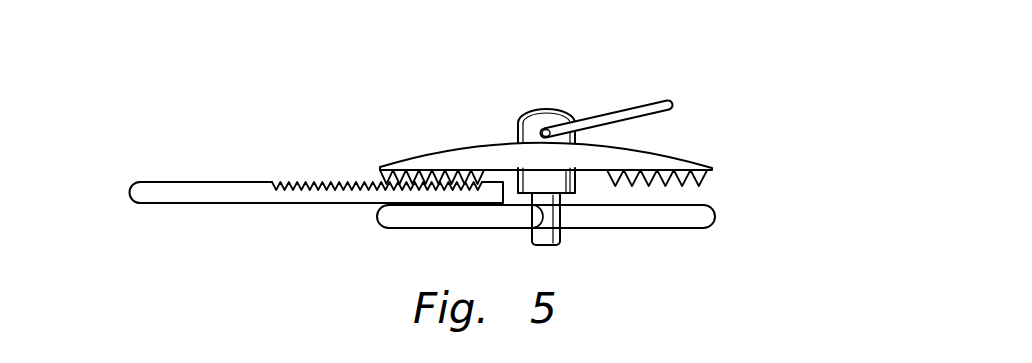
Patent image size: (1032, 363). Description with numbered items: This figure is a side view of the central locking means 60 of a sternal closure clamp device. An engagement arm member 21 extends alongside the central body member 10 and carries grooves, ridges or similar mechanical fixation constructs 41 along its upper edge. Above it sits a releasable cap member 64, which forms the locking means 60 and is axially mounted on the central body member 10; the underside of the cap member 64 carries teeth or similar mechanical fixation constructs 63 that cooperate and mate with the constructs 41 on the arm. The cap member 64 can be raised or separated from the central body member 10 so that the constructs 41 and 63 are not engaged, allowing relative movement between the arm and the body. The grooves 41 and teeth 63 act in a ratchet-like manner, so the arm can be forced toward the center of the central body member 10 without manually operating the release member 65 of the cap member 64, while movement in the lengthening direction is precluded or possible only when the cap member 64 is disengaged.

The central body member 10 is at (713, 226).
The engagement arm member 21 is at (190, 203).
The mechanical fixation constructs 41 is at (337, 181).
The locking means 60 is at (604, 138).
The mechanical fixation constructs 63 is at (707, 178).
The cap member 64 is at (673, 150).
The release member 65 is at (560, 109).